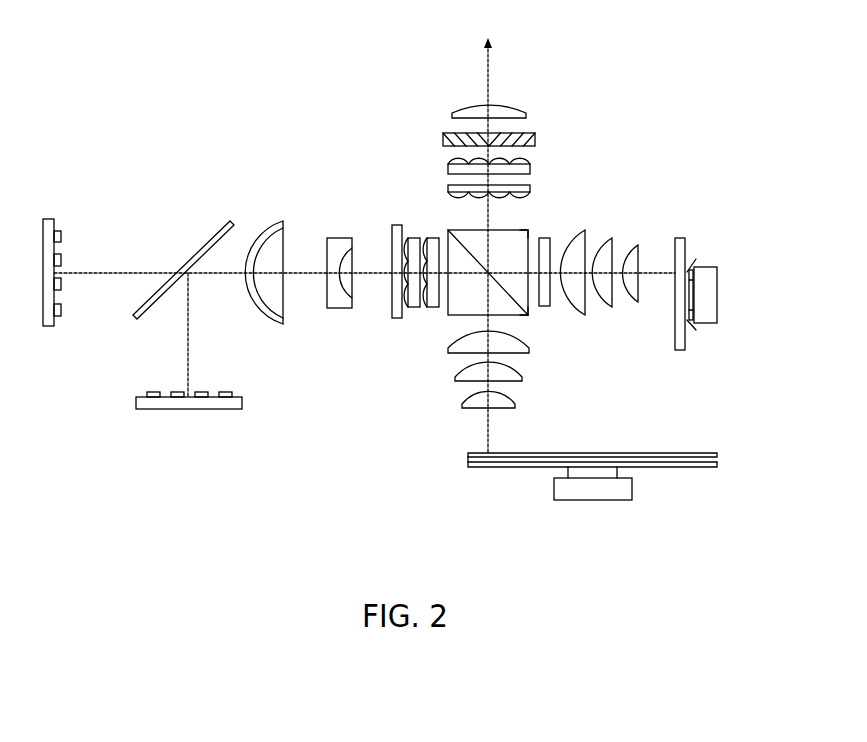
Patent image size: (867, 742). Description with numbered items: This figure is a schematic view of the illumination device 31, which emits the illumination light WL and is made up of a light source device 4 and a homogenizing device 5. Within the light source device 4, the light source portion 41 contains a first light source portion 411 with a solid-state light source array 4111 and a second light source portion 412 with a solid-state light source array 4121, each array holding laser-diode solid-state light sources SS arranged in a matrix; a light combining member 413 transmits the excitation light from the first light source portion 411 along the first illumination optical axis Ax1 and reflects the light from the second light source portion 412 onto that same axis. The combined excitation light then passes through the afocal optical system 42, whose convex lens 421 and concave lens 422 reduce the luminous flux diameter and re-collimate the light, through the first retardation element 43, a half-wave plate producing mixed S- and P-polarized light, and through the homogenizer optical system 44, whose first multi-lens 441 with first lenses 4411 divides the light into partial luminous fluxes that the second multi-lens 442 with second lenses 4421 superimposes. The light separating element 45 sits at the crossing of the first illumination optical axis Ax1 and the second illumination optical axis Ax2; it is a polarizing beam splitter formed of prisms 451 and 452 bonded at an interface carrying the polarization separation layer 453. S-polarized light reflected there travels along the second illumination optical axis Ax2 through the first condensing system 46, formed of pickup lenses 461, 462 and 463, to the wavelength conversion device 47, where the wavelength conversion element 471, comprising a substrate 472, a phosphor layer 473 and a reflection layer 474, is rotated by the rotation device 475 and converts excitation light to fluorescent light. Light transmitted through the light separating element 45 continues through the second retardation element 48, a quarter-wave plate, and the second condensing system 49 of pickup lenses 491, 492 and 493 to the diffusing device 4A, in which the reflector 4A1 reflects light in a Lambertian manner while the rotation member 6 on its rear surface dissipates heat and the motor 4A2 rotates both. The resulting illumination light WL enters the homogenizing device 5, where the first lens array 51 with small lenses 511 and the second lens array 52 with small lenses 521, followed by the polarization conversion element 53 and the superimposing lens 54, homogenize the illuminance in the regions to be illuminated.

The illumination device 31 is at (674, 60).
The light source device 4 is at (77, 139).
The light source portion 41 is at (95, 462).
The first light source portion 411 is at (48, 219).
The solid-state light source array 4111 is at (48, 326).
The second light source portion 412 is at (242, 404).
The solid-state light source array 4121 is at (136, 404).
The light combining member 413 is at (218, 229).
The solid-state light source SS is at (55, 236).
The first illumination optical axis Ax1 is at (118, 270).
The second illumination optical axis Ax2 is at (491, 58).
The illumination light WL is at (486, 35).
The afocal optical system 42 is at (333, 373).
The lens 421 is at (272, 326).
The lens 422 is at (340, 309).
The first retardation element 43 is at (393, 226).
The homogenizer optical system 44 is at (425, 361).
The first multi-lens 441 is at (413, 310).
The first lens 4411 is at (407, 238).
The second multi-lens 442 is at (432, 310).
The second lens 4421 is at (426, 238).
The light separating element 45 is at (517, 320).
The prism 451 is at (457, 314).
The prism 452 is at (532, 231).
The polarization separation layer 453 is at (532, 310).
The first condensing system 46 is at (433, 389).
The pickup lens 461 is at (531, 353).
The pickup lens 462 is at (524, 380).
The pickup lens 463 is at (517, 406).
The wavelength conversion device 47 is at (702, 496).
The wavelength conversion element 471 is at (775, 432).
The substrate 472 is at (717, 465).
The phosphor layer 473 is at (717, 454).
The reflection layer 474 is at (717, 460).
The rotation device 475 is at (632, 490).
The second retardation element 48 is at (547, 237).
The second condensing system 49 is at (613, 205).
The pickup lens 491 is at (581, 230).
The pickup lens 492 is at (612, 310).
The pickup lens 493 is at (633, 245).
The diffusing device 4A is at (752, 168).
The reflector 4A1 is at (678, 238).
The motor 4A2 is at (706, 266).
The rotation member 6 is at (693, 265).
The homogenizing device 5 is at (590, 92).
The first lens array 51 is at (531, 189).
The small lens 511 is at (515, 199).
The second lens array 52 is at (531, 169).
The small lens 521 is at (452, 163).
The polarization conversion element 53 is at (536, 140).
The superimposing lens 54 is at (527, 114).